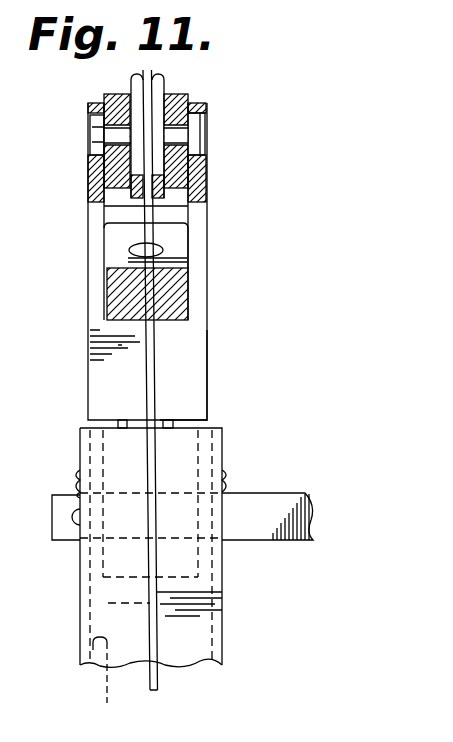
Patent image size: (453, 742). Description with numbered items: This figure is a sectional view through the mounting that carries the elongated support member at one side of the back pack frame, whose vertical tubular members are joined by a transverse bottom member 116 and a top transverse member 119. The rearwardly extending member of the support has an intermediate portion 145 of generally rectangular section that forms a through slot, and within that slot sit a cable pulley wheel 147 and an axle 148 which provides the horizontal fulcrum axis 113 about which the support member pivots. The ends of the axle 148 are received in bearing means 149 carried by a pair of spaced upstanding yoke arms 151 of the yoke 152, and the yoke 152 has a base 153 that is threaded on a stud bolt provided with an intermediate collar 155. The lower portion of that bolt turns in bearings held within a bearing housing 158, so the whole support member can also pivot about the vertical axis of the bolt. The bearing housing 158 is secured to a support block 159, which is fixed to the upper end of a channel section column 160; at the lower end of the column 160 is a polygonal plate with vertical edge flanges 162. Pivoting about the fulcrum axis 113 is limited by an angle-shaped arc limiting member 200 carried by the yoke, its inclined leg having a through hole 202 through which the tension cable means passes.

The cable pulley wheel 147 is at (163, 78).
The transverse bottom member 116 is at (137, 97).
The intermediate portion 145 is at (182, 96).
The horizontal fulcrum axis 113 is at (235, 130).
The axle 148 is at (115, 135).
The bearing means 149 is at (88, 153).
The yoke arms 151 is at (197, 244).
The through hole 202 is at (132, 260).
The arc limiting member 200 is at (165, 297).
The yoke 152 is at (117, 362).
The base 153 is at (180, 386).
The intermediate collar 155 is at (128, 420).
The support block 159 is at (93, 447).
The top transverse member 119 is at (271, 505).
The bearing housing 158 is at (197, 568).
The channel section column 160 is at (188, 642).
The vertical edge flanges 162 is at (122, 400).